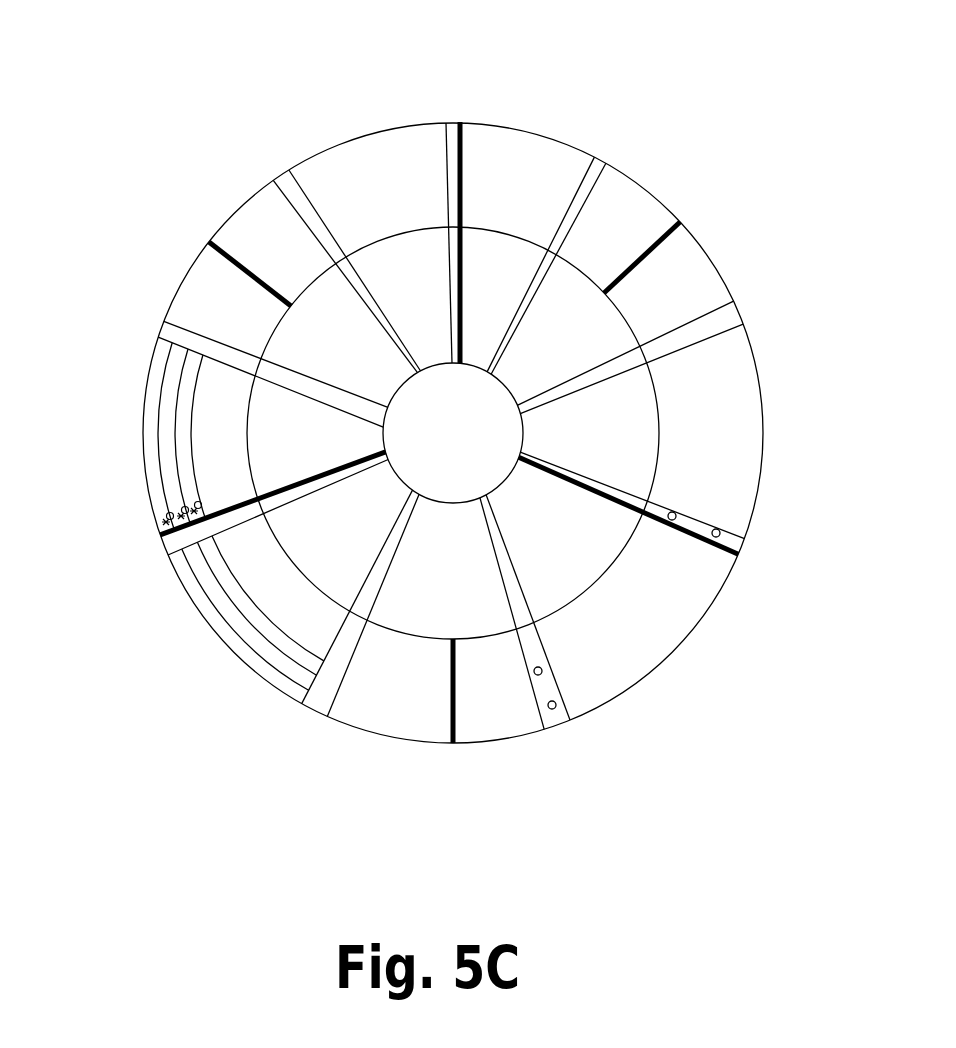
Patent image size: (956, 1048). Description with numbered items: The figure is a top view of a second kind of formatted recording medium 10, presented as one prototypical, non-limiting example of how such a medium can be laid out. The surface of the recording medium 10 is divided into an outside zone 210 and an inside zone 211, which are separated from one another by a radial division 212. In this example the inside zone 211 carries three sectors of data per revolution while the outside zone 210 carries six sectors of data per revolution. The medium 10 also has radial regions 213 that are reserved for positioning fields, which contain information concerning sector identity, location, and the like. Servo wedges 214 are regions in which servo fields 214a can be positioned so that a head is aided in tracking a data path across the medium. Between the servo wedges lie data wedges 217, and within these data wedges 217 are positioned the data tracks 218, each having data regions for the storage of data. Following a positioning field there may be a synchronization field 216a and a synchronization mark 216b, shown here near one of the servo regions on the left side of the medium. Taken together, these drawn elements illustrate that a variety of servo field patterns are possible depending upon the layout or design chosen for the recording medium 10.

The recording medium 10 is at (763, 397).
The outside zone 210 is at (373, 180).
The inside zone 211 is at (348, 525).
The radial division 212 is at (662, 452).
The radial regions 213 is at (635, 262).
The servo wedges 214 is at (694, 325).
The servo fields 214a is at (556, 705).
The synchronization field 216a is at (187, 544).
The synchronization mark 216b is at (194, 504).
The data wedges 217 is at (757, 360).
The data tracks 218 is at (190, 444).